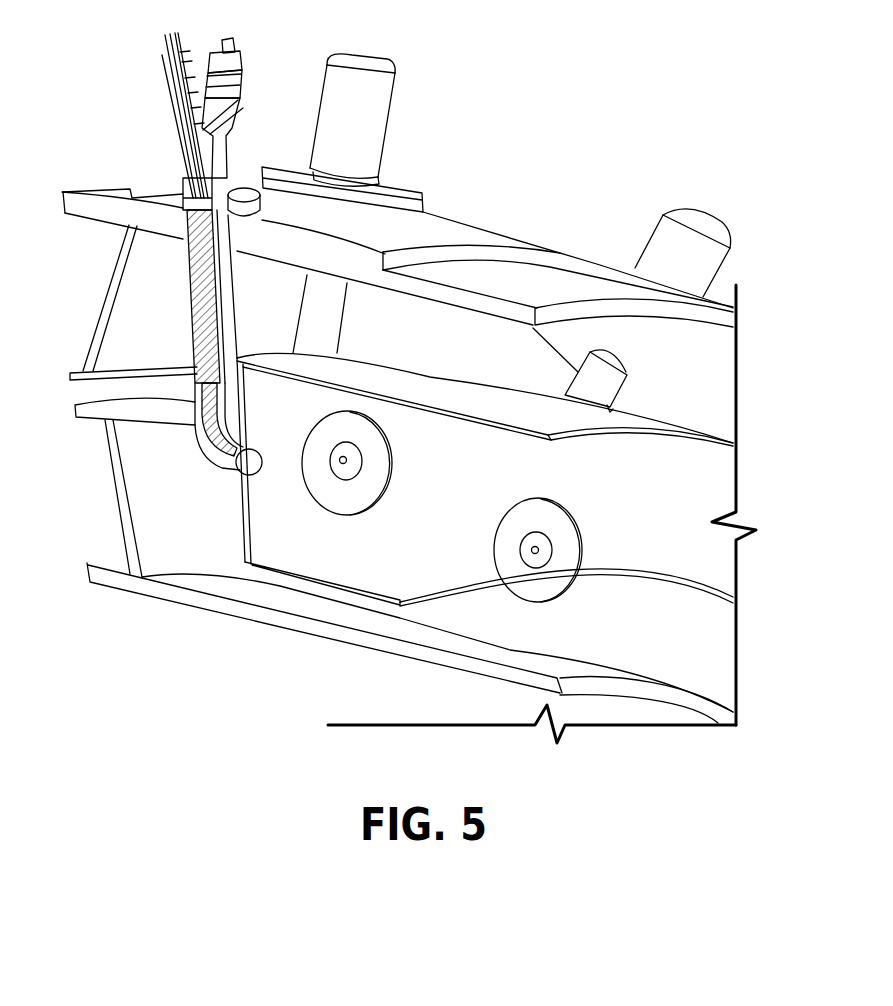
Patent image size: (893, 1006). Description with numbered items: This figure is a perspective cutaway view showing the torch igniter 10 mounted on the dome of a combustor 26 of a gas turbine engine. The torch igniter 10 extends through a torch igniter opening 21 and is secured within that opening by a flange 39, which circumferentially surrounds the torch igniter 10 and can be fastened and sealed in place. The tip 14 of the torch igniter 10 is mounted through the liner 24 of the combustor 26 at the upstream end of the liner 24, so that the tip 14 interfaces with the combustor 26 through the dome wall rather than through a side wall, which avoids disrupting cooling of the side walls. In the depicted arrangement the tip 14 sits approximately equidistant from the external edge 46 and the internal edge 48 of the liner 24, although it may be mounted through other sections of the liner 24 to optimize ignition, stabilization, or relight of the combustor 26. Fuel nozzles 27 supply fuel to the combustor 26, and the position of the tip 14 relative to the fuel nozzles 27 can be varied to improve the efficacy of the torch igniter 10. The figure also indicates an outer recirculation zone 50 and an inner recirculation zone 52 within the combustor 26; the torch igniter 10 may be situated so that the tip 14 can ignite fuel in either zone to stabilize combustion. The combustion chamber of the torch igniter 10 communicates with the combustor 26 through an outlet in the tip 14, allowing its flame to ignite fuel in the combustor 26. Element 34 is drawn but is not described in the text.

The torch igniter 10 is at (118, 157).
The tip 14 is at (140, 477).
The torch igniter opening 21 is at (175, 220).
The liner 24 is at (243, 533).
The combustor 26 is at (426, 578).
The fuel nozzles 27 is at (388, 118).
The nozzle tube 34 is at (238, 460).
The flange 39 is at (242, 182).
The external edge 46 is at (643, 427).
The internal edge 48 is at (672, 568).
The outer recirculation zone 50 is at (290, 418).
The inner recirculation zone 52 is at (300, 533).